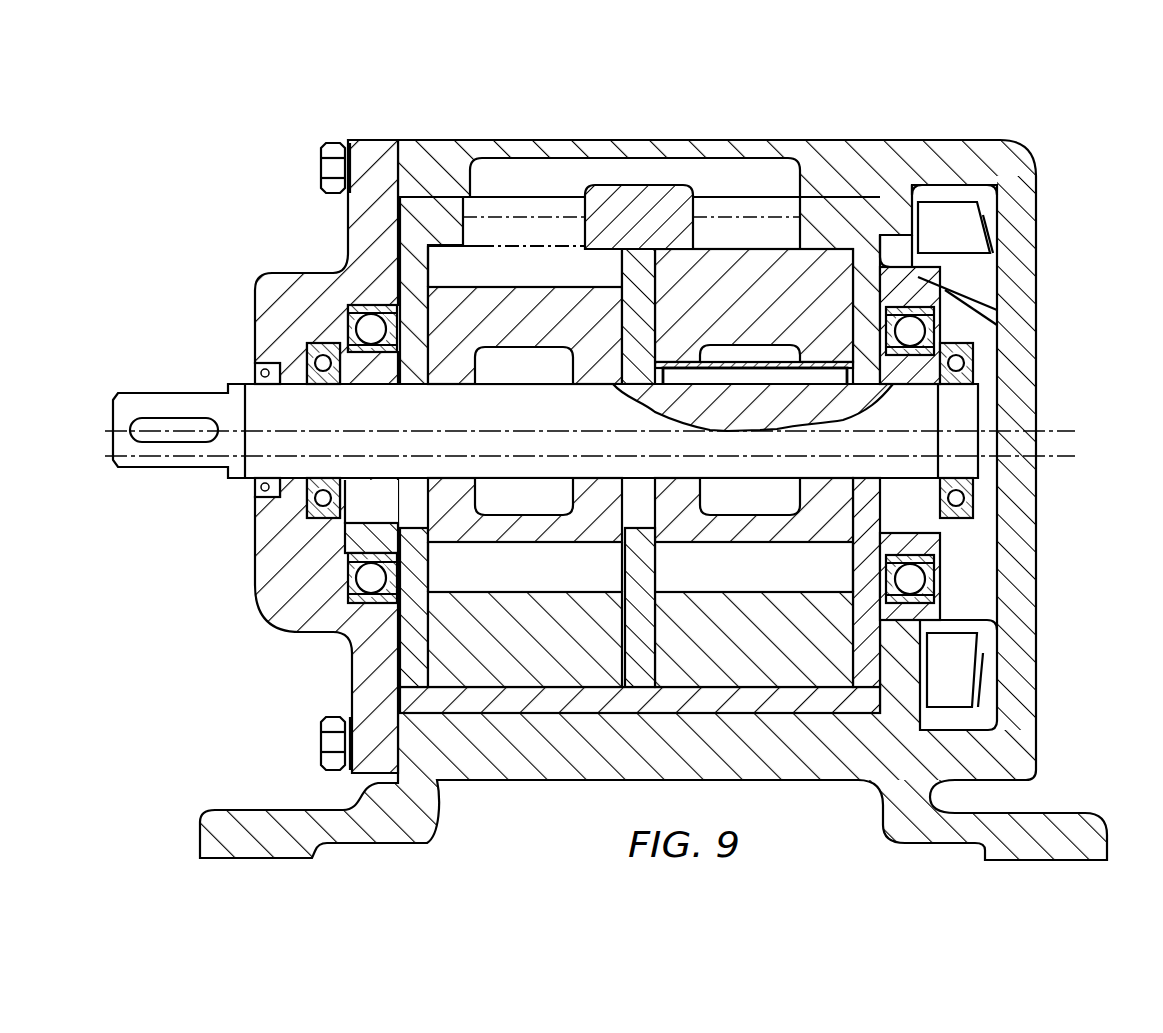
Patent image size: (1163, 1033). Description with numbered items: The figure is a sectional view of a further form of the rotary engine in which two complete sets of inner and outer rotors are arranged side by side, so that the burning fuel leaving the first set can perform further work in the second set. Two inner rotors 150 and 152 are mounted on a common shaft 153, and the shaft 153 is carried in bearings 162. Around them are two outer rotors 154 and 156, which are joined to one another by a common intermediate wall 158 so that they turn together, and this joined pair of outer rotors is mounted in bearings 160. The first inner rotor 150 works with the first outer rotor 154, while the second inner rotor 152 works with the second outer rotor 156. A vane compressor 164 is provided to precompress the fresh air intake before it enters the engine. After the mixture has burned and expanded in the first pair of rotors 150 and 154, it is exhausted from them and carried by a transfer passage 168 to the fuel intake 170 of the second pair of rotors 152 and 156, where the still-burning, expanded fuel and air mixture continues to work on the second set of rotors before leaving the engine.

The inner rotor 150 is at (477, 312).
The inner rotor 152 is at (800, 283).
The common shaft 153 is at (267, 407).
The outer rotor 154 is at (450, 642).
The outer rotor 156 is at (820, 630).
The common intermediate wall 158 is at (630, 563).
The bearings 160 is at (357, 563).
The bearings 162 is at (248, 520).
The vane compressor 164 is at (945, 665).
The transfer passage 168 is at (644, 186).
The fuel intake 170 is at (734, 214).